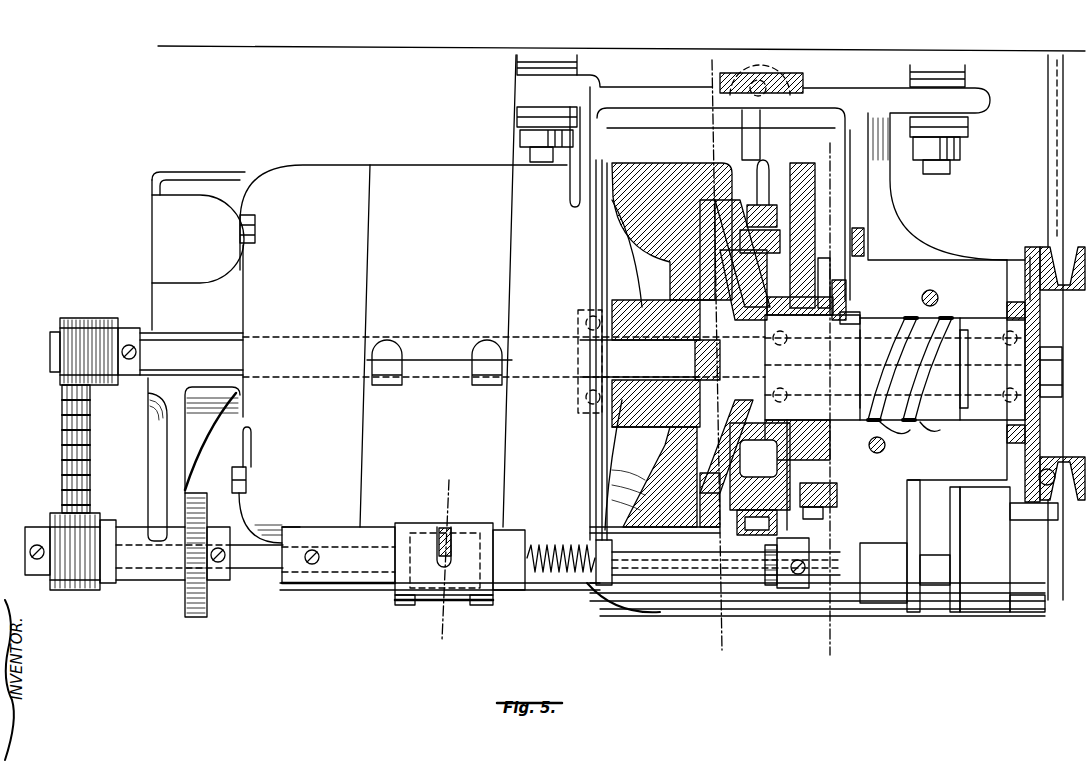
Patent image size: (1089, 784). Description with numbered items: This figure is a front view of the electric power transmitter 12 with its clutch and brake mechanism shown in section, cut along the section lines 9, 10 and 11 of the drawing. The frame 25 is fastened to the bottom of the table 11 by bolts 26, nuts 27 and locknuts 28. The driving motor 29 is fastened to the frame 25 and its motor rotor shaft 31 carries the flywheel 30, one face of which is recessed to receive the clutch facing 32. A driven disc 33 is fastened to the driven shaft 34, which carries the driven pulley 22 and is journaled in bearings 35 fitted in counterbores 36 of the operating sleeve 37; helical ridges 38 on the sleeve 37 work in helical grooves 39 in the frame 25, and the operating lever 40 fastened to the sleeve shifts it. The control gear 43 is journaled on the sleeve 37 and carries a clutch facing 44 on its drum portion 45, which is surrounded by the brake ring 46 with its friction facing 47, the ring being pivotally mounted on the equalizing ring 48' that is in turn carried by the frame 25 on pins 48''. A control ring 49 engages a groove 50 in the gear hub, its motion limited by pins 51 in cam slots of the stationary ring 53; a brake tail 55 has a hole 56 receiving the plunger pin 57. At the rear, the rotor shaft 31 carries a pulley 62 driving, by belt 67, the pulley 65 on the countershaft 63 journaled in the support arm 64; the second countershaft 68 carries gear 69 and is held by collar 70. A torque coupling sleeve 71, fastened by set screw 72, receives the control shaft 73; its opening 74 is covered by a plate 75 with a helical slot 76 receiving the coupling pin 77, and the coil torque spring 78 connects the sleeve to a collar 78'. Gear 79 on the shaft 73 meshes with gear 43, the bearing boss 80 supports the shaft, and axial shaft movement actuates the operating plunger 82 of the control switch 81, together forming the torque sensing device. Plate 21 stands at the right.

The section line 9- 9 is at (702, 74).
The section line 10- 10 is at (440, 487).
The table 11 is at (341, 60).
The electric power transmitter 12 is at (325, 149).
The vertical plate 21 is at (1048, 100).
The driven pulley 22 is at (1050, 250).
The frame 25 is at (628, 100).
The bolts 26 is at (530, 158).
The nuts 27 is at (518, 122).
The locknuts 28 is at (520, 140).
The driving motor 29 is at (442, 292).
The flywheel 30 is at (668, 165).
The motor rotor shaft 31 is at (295, 332).
The clutch facing 32 is at (670, 290).
The driven disc 33 is at (740, 445).
The driven shaft 34 is at (1040, 405).
The bearings 35 is at (895, 392).
The counterbores 36 is at (985, 335).
The operating sleeve 37 is at (975, 420).
The helical ridges 38 is at (895, 428).
The helical grooves 39 is at (895, 318).
The operating lever 40 is at (1025, 300).
The control gear 43 is at (815, 183).
The clutch facing 44 is at (722, 340).
The drum portion 45 is at (752, 485).
The brake ring 46 is at (755, 255).
The friction facing 47 is at (757, 522).
The equalizing ring 48' is at (756, 142).
The pins 48'' is at (784, 80).
The control ring 49 is at (832, 295).
The groove 50 is at (846, 305).
The pins 51 is at (832, 268).
The stationary ring 53 is at (860, 222).
The brake tail 55 is at (812, 497).
The hole 56 is at (810, 518).
The plunger pin 57 is at (910, 495).
The pulley 62 is at (105, 320).
The countershaft 63 is at (25, 535).
The support arm 64 is at (150, 448).
The pulley 65 is at (60, 590).
The belt 67 is at (62, 440).
The second countershaft 68 is at (258, 570).
The gear 69 is at (195, 617).
The collar 70 is at (112, 585).
The torque coupling sleeve 71 is at (330, 583).
The set screw 72 is at (312, 580).
The control shaft 73 is at (645, 575).
The opening 74 is at (385, 595).
The plate 75 is at (465, 603).
The helical slot 76 is at (450, 527).
The coupling pin 77 is at (437, 545).
The coil torque spring 78 is at (561, 586).
The collar 78' is at (598, 591).
The gear 79 is at (785, 588).
The bearing boss 80 is at (885, 603).
The control switch 81 is at (1010, 560).
The operating plunger 82 is at (930, 585).